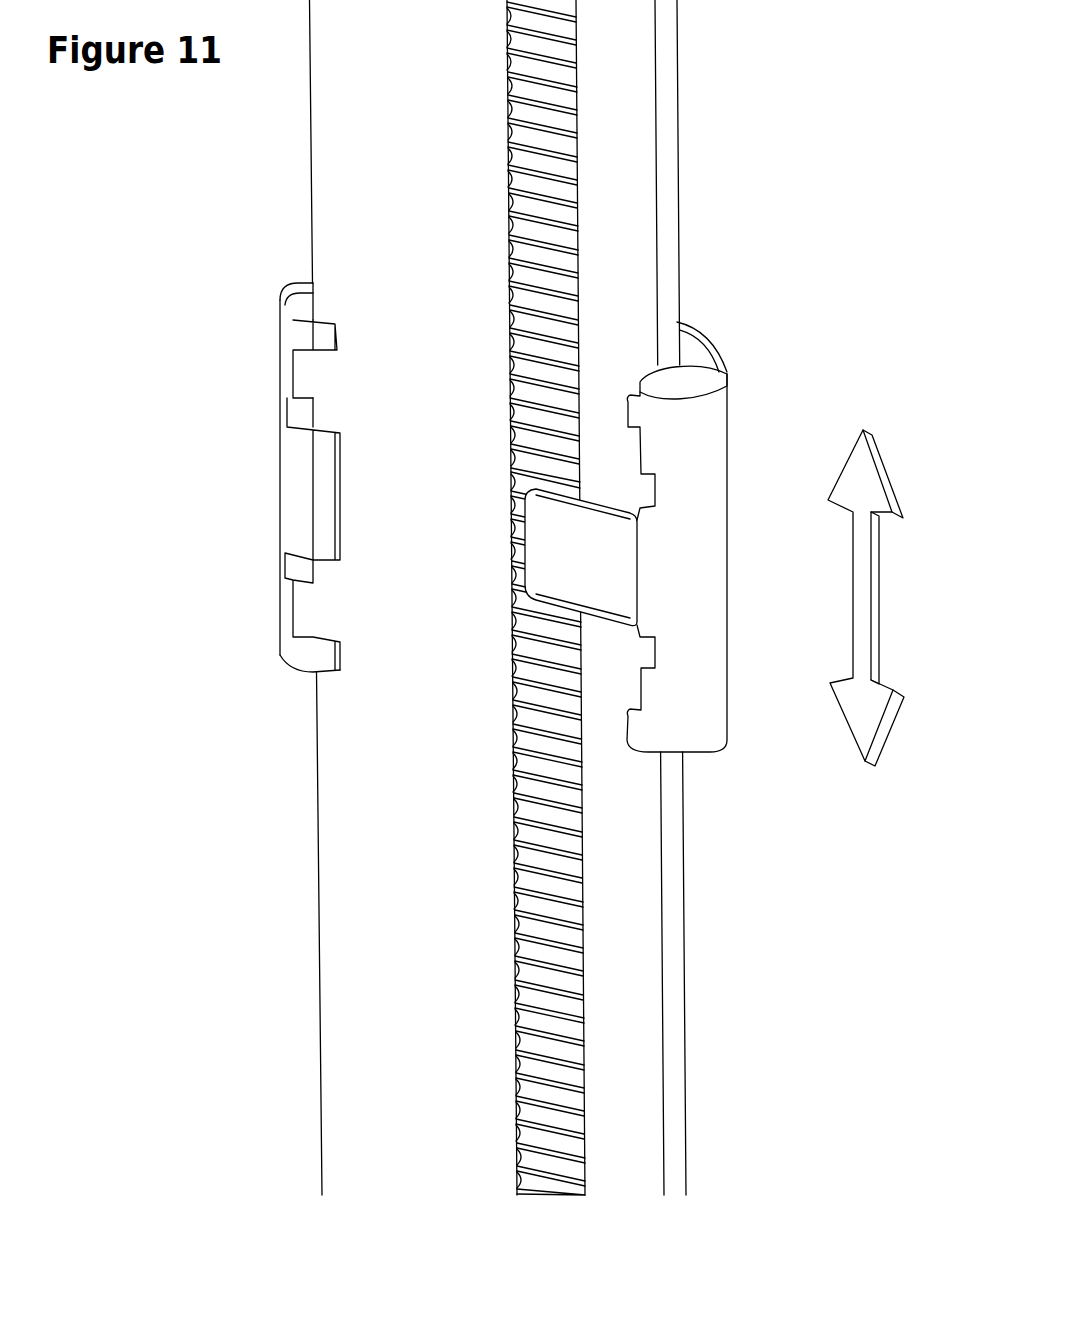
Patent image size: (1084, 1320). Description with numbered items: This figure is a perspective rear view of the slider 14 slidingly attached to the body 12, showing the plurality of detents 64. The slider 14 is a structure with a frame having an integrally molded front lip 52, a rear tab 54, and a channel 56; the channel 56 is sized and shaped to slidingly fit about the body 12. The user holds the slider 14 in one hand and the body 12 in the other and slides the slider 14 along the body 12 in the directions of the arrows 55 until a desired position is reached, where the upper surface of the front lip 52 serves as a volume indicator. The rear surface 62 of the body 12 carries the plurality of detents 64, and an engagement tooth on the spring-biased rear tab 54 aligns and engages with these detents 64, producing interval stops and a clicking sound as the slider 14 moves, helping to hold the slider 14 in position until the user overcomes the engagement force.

The body 12 is at (332, 206).
The detents 64 is at (575, 48).
The rear tab 54 is at (600, 566).
The slider 14 is at (697, 728).
The channel 56 is at (683, 362).
The front lip 52 is at (692, 345).
The arrows 55 is at (863, 608).
The rear surface 62 is at (432, 961).